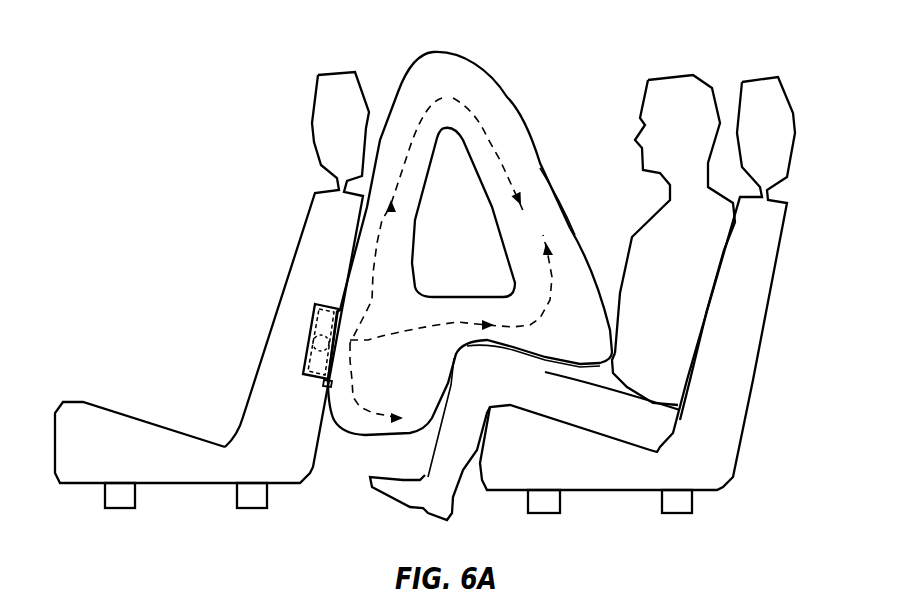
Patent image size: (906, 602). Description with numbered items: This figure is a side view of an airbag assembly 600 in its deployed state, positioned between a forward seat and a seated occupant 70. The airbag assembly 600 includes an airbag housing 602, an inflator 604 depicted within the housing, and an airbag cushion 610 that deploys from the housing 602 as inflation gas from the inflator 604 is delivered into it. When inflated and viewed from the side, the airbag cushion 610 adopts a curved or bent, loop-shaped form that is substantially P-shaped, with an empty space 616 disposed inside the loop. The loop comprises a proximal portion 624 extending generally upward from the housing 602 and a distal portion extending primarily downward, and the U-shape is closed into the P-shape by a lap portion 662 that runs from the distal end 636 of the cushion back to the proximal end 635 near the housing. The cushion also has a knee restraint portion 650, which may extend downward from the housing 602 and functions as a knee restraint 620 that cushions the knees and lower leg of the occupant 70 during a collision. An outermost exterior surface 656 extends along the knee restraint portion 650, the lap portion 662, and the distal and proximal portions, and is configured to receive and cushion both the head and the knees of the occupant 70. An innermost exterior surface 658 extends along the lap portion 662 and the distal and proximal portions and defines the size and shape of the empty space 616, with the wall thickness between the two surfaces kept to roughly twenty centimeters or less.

The airbag assembly 600 is at (499, 275).
The airbag cushion 610 is at (376, 68).
The empty space 616 is at (463, 212).
The innermost exterior surface 658 is at (462, 152).
The outermost exterior surface 656 is at (543, 165).
The proximal portion 624 is at (341, 236).
The airbag housing 602 is at (260, 326).
The inflator 604 is at (316, 340).
The proximal end 635 is at (311, 398).
The knee restraint portion 650 is at (378, 452).
The knee restraint 620 is at (466, 386).
The lap portion 662 is at (525, 373).
The distal end 636 is at (630, 345).
The occupant 70 is at (696, 258).